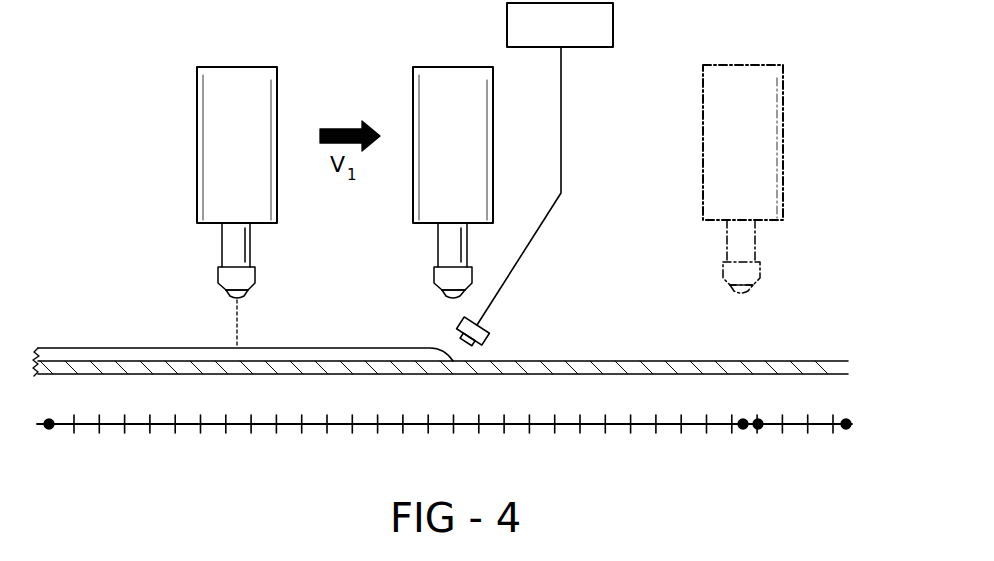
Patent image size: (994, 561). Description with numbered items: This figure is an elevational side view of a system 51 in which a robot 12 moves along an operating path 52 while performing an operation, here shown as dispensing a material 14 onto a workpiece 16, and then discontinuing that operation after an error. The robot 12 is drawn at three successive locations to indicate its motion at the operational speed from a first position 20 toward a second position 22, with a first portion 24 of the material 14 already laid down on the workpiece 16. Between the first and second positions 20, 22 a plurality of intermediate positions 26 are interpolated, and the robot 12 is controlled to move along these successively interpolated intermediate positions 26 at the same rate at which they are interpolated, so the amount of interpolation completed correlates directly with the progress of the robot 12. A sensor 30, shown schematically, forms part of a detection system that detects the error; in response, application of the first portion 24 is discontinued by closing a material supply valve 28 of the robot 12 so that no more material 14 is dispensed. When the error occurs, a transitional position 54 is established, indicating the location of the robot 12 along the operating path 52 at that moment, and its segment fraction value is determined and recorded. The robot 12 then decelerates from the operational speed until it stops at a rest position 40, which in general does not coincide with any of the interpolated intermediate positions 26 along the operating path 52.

The system 51 is at (132, 166).
The robot 12 is at (240, 67).
The material supply valve 28 is at (241, 298).
The sensor 30 is at (613, 14).
The workpiece 16 is at (620, 361).
The first portion 24 is at (170, 348).
The material 14 is at (103, 336).
The operating path 52 is at (292, 458).
The first position 20 is at (53, 430).
The rest position 40 is at (744, 430).
The transitional position 54 is at (759, 430).
The second position 22 is at (848, 430).
The intermediate positions 26 is at (681, 433).